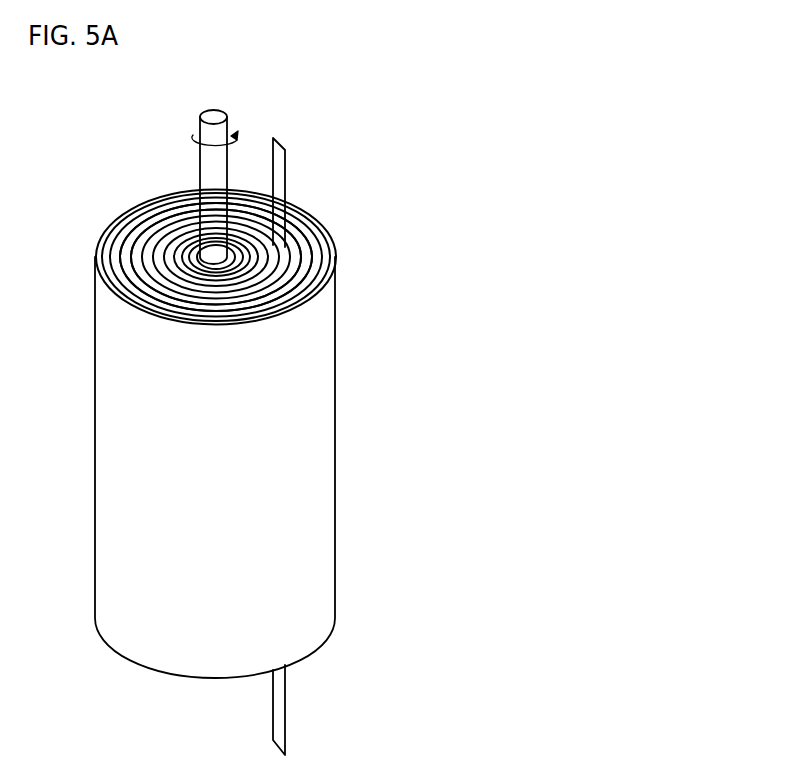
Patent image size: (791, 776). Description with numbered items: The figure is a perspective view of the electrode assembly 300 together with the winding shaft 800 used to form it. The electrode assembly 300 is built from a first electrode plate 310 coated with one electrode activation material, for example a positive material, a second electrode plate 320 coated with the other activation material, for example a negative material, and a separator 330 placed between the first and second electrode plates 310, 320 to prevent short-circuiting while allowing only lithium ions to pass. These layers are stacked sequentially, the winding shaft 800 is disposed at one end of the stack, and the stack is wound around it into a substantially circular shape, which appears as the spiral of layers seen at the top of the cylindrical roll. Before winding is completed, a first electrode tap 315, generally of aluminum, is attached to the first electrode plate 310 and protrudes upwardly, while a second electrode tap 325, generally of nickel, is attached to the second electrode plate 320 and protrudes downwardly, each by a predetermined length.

The electrode assembly 300 is at (363, 437).
The first electrode plate 310 is at (303, 242).
The second electrode plate 320 is at (315, 253).
The separator 330 is at (320, 280).
The first electrode tap 315 is at (277, 167).
The second electrode tap 325 is at (277, 702).
The winding shaft 800 is at (215, 115).